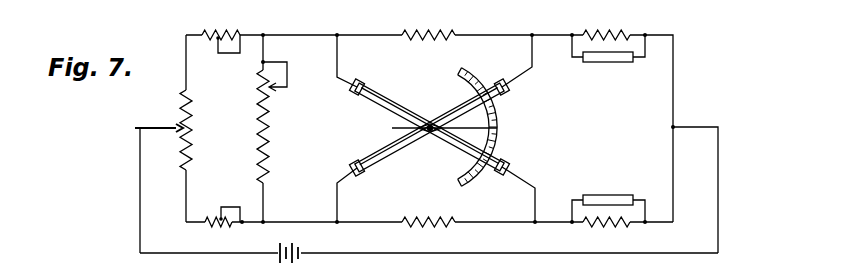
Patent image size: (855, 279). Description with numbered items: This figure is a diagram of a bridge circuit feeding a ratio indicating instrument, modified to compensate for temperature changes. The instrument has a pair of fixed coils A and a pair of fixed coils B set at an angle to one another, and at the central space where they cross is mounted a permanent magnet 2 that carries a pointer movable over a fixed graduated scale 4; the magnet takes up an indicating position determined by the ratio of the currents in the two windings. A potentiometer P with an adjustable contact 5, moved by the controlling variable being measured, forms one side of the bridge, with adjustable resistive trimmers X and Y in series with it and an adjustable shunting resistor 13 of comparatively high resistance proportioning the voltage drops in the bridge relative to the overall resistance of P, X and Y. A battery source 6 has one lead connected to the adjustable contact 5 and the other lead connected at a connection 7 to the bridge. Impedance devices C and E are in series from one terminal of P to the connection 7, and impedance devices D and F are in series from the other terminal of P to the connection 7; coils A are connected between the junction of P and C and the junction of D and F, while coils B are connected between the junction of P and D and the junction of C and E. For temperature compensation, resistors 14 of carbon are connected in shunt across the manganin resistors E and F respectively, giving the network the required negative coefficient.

The permanent magnet 2 is at (394, 128).
The fixed graduated scale 4 is at (498, 121).
The adjustable contact 5 is at (172, 126).
The source 6 is at (429, 259).
The connection 7 is at (670, 127).
The adjustable resistor 13 is at (276, 112).
The shunting resistors 14 is at (606, 62).
The fixed coils A is at (429, 120).
The fixed coils B is at (429, 133).
The impedance device C is at (428, 25).
The impedance device D is at (428, 211).
The impedance device E is at (606, 25).
The impedance device F is at (606, 232).
The potentiometer P is at (176, 130).
The adjustable resistive trimmer X is at (221, 33).
The adjustable resistive trimmer Y is at (222, 229).